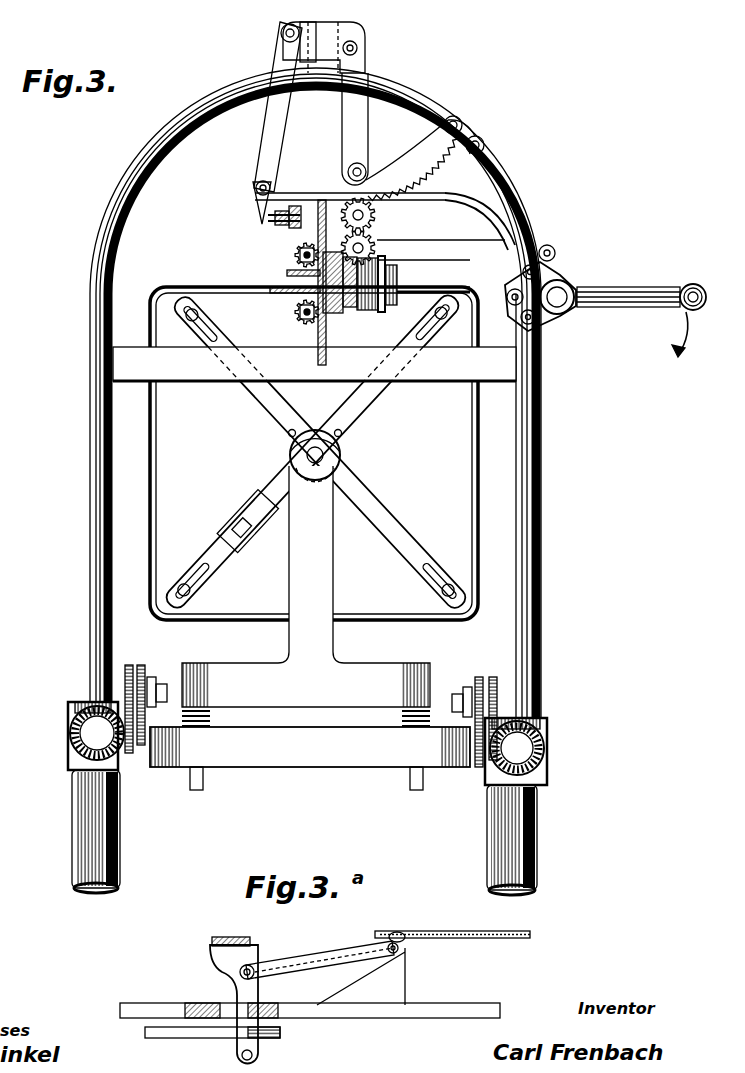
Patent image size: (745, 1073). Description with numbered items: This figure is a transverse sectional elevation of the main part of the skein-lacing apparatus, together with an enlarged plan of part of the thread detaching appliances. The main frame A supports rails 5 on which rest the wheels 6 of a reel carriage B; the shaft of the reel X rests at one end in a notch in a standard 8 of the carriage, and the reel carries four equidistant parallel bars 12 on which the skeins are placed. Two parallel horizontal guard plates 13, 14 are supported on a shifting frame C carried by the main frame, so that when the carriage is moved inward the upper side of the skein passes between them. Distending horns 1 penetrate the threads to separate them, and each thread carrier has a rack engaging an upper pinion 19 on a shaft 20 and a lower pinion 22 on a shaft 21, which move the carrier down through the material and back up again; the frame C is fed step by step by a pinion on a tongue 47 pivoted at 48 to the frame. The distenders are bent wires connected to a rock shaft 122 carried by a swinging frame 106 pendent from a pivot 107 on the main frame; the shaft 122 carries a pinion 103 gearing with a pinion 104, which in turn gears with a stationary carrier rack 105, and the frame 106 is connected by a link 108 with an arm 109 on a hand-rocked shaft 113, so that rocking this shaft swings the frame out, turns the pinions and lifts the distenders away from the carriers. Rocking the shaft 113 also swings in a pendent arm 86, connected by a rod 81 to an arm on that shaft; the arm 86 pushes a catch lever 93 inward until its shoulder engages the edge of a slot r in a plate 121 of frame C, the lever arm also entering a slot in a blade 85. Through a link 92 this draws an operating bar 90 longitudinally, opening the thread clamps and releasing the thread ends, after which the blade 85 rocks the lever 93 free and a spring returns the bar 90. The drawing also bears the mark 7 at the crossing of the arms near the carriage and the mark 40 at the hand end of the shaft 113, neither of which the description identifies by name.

In FIG. 3, the distending horns 1 is at (373, 333).
In FIG. 3, the rails 5 is at (132, 756).
In FIG. 3, the wheels 6 is at (125, 687).
In FIG. 3, the pivot boss 7 is at (300, 448).
In FIG. 3, the standard 8 is at (306, 586).
In FIG. 3, the parallel bars 12 is at (155, 306).
In FIG. 3, the guard plate 13 is at (272, 292).
In FIG. 3, the guard plate 14 is at (287, 273).
In FIG. 3, the upper pinion 19 is at (298, 250).
In FIG. 3, the upper shaft 20 is at (297, 260).
In FIG. 3, the lower shaft 21 is at (326, 318).
In FIG. 3, the lower pinion 22 is at (297, 312).
In FIG. 3, the hand lever 40 is at (670, 305).
In FIG. 3, the tongue 47 is at (396, 300).
In FIG. 3, the pivot 48 is at (397, 281).
In FIG. 3, the rod 81 is at (505, 222).
In FIG. 3, the blade 85 is at (335, 200).
In FIG. 3A, the blade 85 is at (197, 1038).
In FIG. 3, the pendent arm 86 is at (262, 150).
In FIG. 3A, the pendent arm 86 is at (245, 937).
In FIG. 3, the operating bar 90 is at (276, 224).
In FIG. 3A, the operating bar 90 is at (492, 939).
In FIG. 3A, the link 92 is at (335, 955).
In FIG. 3, the catch lever 93 is at (297, 205).
In FIG. 3A, the catch lever 93 is at (210, 956).
In FIG. 3, the pinion 103 is at (376, 234).
In FIG. 3, the pinion 104 is at (376, 212).
In FIG. 3, the carrier rack 105 is at (490, 158).
In FIG. 3, the swinging frame 106 is at (366, 118).
In FIG. 3, the pivot 107 is at (360, 48).
In FIG. 3, the link 108 is at (455, 229).
In FIG. 3, the arm 109 is at (560, 255).
In FIG. 3, the shaft 113 is at (565, 290).
In FIG. 3A, the slotted plate 121 is at (413, 1018).
In FIG. 3, the rock shaft 122 is at (378, 250).
In FIG. 3, the main frame A is at (556, 432).
In FIG. 3, the reel carriage B is at (310, 726).
In FIG. 3, the shifting frame C is at (316, 341).
In FIG. 3, the reel X is at (356, 475).
In FIG. 3A, the slot r is at (226, 1003).